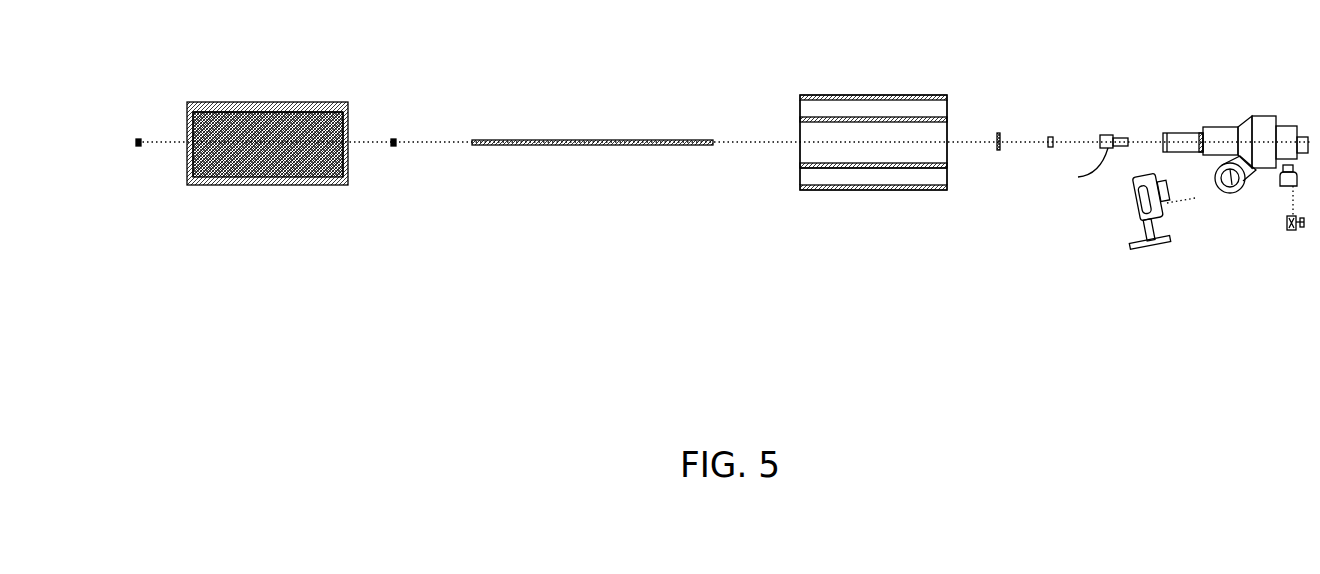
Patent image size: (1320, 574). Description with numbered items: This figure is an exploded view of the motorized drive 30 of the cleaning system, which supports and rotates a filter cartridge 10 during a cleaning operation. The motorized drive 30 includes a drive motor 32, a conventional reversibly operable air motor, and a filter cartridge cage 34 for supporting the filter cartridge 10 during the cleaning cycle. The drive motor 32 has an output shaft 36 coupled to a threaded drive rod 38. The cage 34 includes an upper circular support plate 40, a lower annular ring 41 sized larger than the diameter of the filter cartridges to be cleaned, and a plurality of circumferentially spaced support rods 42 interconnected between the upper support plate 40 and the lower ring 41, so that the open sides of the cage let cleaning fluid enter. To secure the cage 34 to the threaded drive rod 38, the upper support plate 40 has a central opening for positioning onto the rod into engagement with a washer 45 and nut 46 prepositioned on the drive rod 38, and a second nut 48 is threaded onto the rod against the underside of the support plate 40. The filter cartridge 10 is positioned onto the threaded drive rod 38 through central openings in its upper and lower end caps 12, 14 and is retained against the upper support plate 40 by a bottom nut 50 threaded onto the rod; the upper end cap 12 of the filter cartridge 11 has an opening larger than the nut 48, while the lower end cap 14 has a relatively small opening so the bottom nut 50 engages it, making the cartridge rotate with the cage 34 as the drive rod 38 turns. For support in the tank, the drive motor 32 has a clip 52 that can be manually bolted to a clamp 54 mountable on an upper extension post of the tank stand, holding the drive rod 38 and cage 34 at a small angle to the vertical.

The filter cartridge 10 is at (320, 190).
The filter cartridge 11 is at (235, 102).
The upper end cap 12 is at (348, 118).
The lower end cap 14 is at (185, 162).
The motorized drive 30 is at (1130, 68).
The drive motor 32 is at (1263, 115).
The filter cartridge cage 34 is at (912, 82).
The output shaft 36 is at (1182, 133).
The threaded drive rod 38 is at (583, 140).
The upper circular support plate 40 is at (948, 155).
The lower annular ring 41 is at (800, 175).
The support rods 42 is at (860, 190).
The washer 45 is at (1000, 133).
The nut 46 is at (1052, 135).
The second nut 48 is at (395, 140).
The bottom nut 50 is at (139, 140).
The clip 52 is at (1232, 192).
The clamp 54 is at (1170, 210).